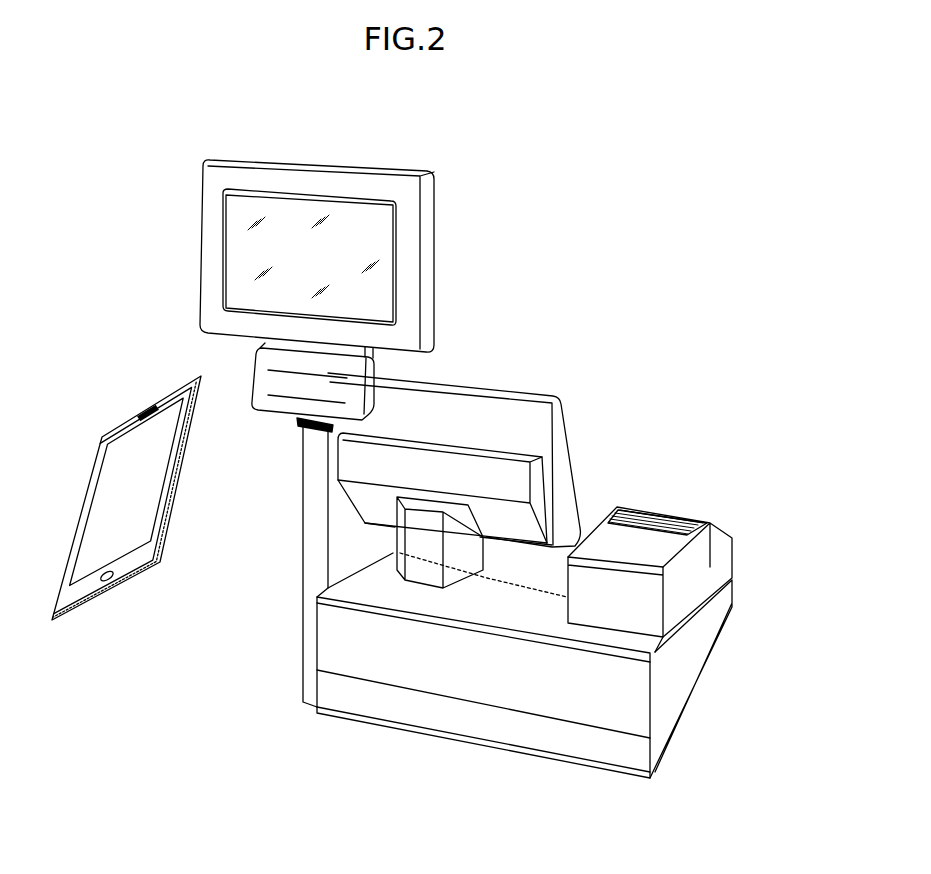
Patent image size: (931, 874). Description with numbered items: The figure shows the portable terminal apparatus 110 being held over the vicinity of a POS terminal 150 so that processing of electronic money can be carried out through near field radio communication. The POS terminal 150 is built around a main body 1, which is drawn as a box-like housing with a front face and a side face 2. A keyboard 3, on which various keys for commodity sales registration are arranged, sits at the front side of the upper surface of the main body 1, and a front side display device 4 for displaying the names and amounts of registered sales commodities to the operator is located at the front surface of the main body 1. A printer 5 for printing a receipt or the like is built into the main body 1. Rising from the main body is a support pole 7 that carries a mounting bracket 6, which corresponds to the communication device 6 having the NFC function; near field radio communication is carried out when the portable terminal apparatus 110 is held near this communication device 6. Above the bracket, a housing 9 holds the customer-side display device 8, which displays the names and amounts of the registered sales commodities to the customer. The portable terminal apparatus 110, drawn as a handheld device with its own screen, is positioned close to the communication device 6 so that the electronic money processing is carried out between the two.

The main body 1 is at (660, 687).
The housing side 2 is at (710, 630).
The keyboard 3 is at (600, 515).
The front side display device 4 is at (508, 388).
The printer 5 is at (697, 578).
The communication device 6 is at (255, 373).
The support pole 7 is at (302, 525).
The customer-side display device 8 is at (243, 249).
The display housing 9 is at (413, 266).
The portable terminal apparatus 110 is at (102, 440).
The POS terminal 150 is at (618, 365).